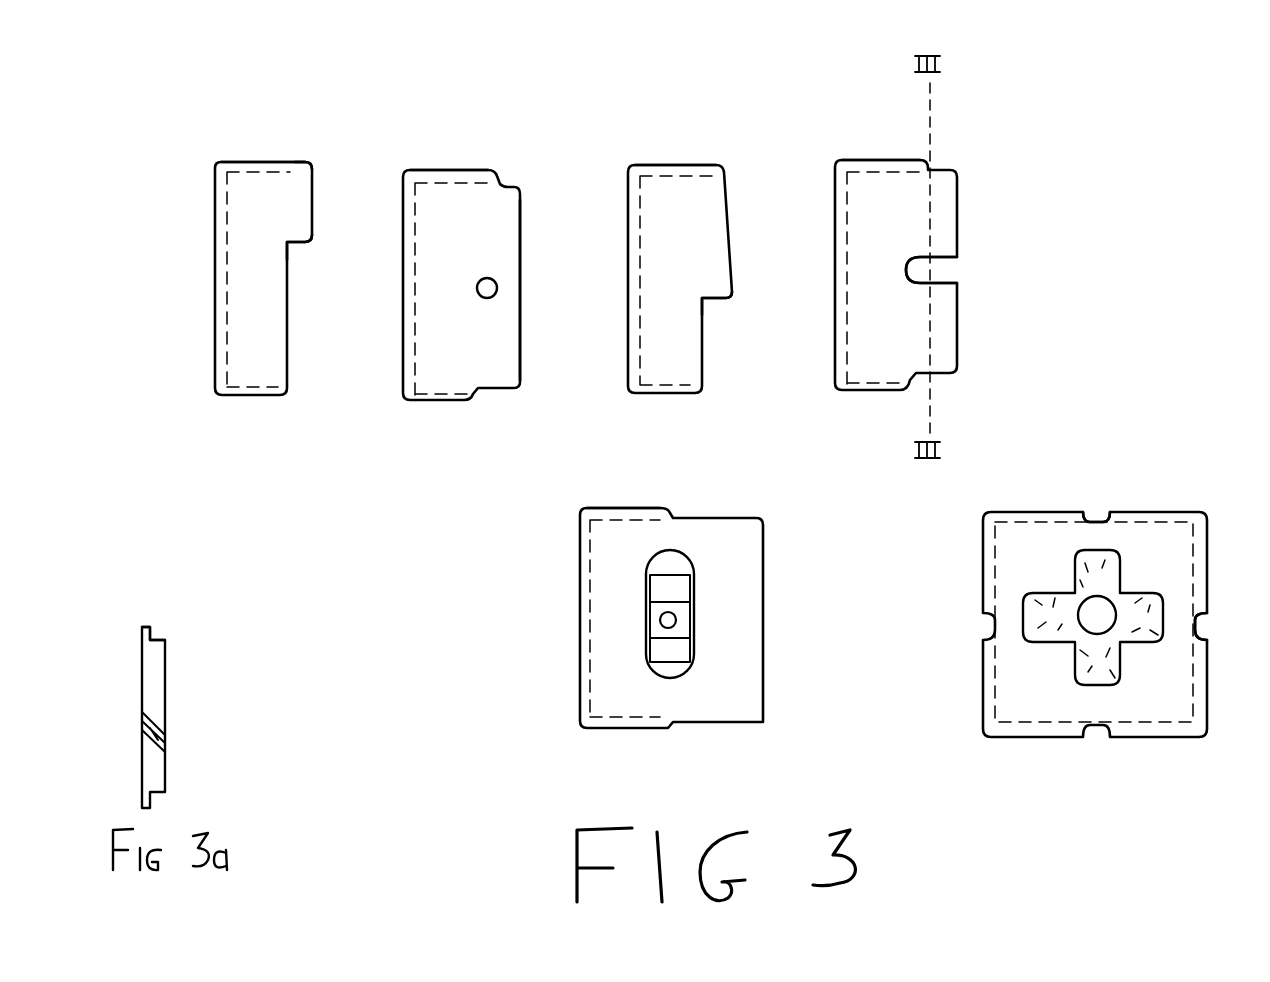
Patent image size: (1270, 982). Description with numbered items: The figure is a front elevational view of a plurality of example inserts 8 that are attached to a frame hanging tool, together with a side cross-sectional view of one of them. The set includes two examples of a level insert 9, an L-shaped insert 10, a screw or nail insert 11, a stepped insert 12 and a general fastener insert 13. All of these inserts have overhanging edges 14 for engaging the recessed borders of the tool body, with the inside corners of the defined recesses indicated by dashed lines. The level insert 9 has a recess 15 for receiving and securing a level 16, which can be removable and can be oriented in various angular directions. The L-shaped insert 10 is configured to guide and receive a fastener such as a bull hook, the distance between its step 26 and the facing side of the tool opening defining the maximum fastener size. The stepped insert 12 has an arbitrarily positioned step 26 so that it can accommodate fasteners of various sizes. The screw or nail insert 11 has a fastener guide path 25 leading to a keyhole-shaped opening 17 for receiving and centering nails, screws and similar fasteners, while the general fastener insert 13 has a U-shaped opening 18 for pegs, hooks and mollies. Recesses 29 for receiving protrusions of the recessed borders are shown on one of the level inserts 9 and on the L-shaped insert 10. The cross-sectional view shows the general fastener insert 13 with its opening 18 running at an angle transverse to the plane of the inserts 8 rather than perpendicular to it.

In FIG. 3, the inserts 8 is at (686, 388).
In FIG. 3, the level insert 9 is at (1050, 624).
In FIG. 3, the L-shaped insert 10 is at (208, 294).
In FIG. 3, the screw or nail insert 11 is at (433, 405).
In FIG. 3, the stepped insert 12 is at (707, 316).
In FIG. 3, the general fastener insert 13 is at (971, 321).
In FIG. 3a, the general fastener insert 13 is at (112, 717).
In FIG. 3, the overhanging edges 14 is at (603, 314).
In FIG. 3a, the overhanging edges 14 is at (181, 611).
In FIG. 3, the recess 15 is at (940, 570).
In FIG. 3, the level 16 is at (588, 657).
In FIG. 3, the opening 17 is at (532, 263).
In FIG. 3, the U-shaped opening 18 is at (979, 255).
In FIG. 3a, the U-shaped opening 18 is at (188, 726).
In FIG. 3, the fastener guide path 25 is at (555, 291).
In FIG. 3, the step 26 is at (534, 294).
In FIG. 3, the recesses 29 is at (782, 398).